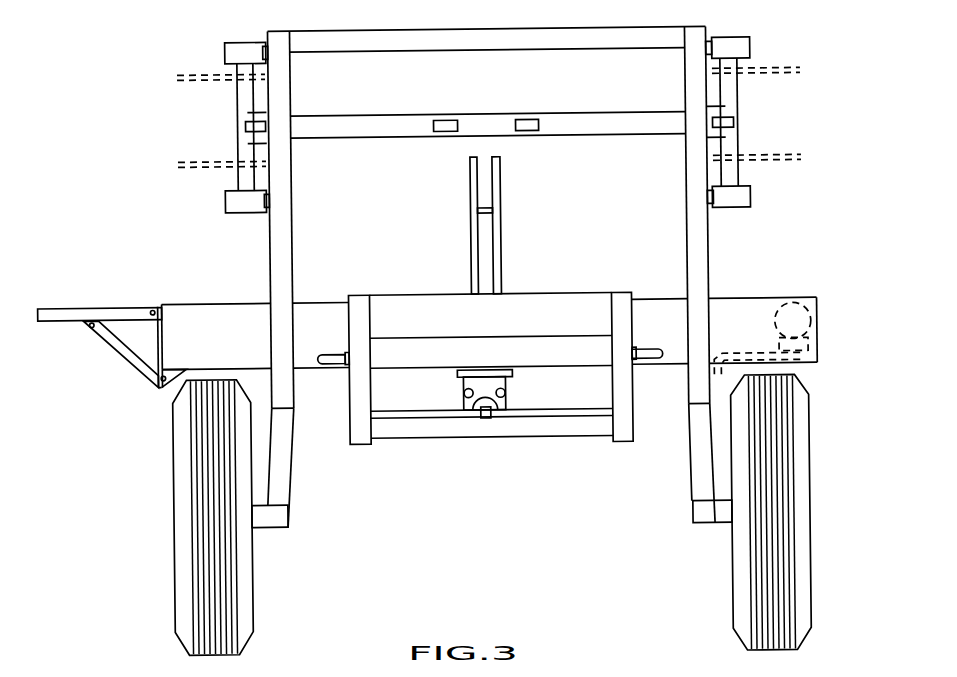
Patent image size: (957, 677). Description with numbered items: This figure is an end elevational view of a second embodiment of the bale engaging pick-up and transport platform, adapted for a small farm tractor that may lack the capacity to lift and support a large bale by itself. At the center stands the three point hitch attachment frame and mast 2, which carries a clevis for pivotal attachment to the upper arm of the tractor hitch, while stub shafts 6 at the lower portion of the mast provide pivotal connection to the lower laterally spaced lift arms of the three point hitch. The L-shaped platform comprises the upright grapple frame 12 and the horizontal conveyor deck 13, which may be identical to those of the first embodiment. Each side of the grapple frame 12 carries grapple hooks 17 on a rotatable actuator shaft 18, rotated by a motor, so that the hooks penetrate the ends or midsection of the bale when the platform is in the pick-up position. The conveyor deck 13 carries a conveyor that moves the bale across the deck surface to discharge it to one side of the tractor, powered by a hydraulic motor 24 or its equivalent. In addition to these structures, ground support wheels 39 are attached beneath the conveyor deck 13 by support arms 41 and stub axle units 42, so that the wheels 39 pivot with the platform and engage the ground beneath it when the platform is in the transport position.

The mast frame 2 is at (502, 243).
The stub shafts 6 is at (332, 350).
The grapple frame 12 is at (284, 240).
The conveyor deck 13 is at (738, 311).
The grapple hooks 17 is at (181, 73).
The actuator shaft 18 is at (734, 148).
The hydraulic motor 24 is at (802, 326).
The ground support wheels 39 is at (230, 615).
The support arms 41 is at (281, 476).
The stub axle units 42 is at (281, 513).